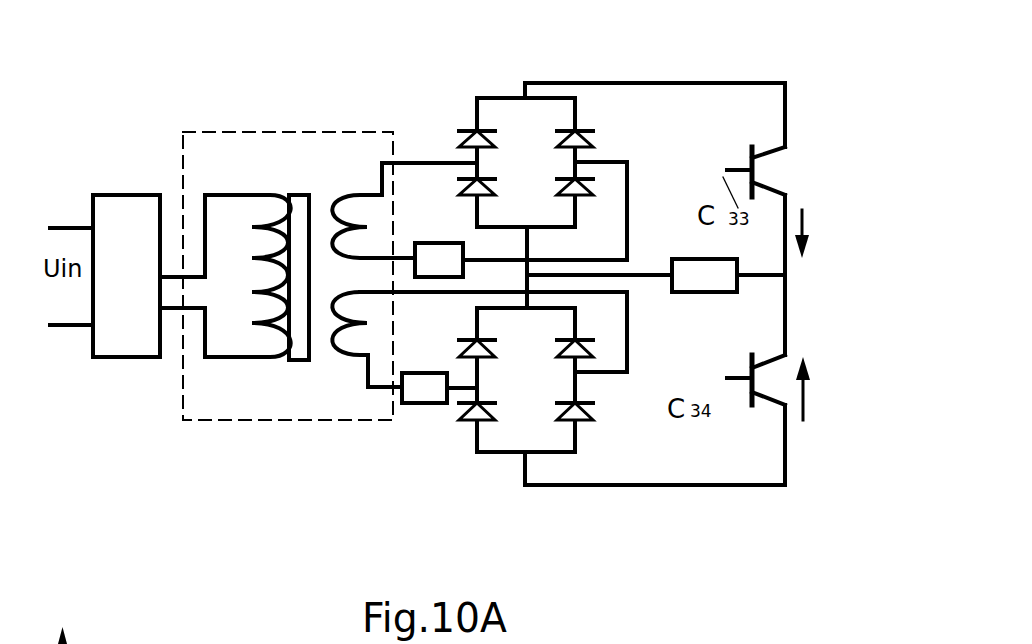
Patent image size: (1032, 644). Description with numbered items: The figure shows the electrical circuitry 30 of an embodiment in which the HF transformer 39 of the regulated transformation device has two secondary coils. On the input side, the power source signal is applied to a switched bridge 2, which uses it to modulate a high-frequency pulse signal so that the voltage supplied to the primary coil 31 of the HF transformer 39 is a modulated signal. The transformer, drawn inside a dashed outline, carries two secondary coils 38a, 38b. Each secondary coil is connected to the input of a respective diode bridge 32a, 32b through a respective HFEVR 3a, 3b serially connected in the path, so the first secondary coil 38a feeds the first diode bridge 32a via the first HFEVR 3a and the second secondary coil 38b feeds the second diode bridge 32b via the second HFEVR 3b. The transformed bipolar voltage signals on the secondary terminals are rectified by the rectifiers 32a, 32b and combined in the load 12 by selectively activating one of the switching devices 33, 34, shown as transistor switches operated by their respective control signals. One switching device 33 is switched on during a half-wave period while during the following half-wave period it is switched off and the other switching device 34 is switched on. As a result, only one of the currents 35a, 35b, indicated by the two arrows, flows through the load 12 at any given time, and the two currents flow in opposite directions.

The electrical circuitry 30 is at (291, 73).
The switched bridge 2 is at (126, 276).
The HF transformer 39 is at (278, 423).
The transformer primary winding 31 is at (222, 212).
The first secondary coil 38a is at (362, 220).
The second secondary coil 38b is at (370, 340).
The first HFEVR 3a is at (432, 260).
The second HFEVR 3b is at (432, 388).
The first diode bridge 32a is at (512, 115).
The second diode bridge 32b is at (513, 437).
The load 12 is at (707, 277).
The first switching device 33 is at (787, 155).
The second switching device 34 is at (772, 418).
The first current 35a is at (839, 231).
The second current 35b is at (840, 388).